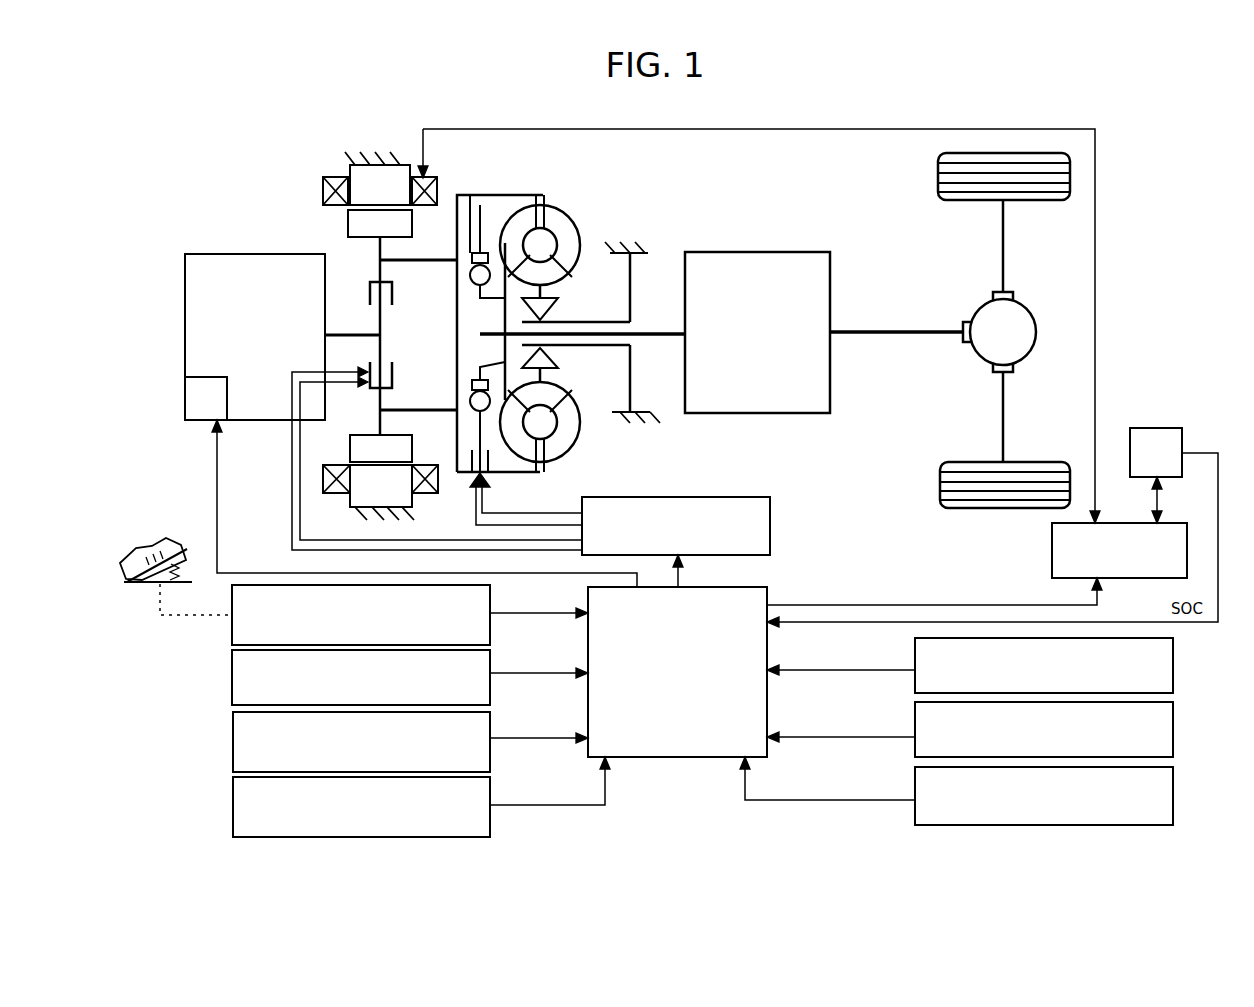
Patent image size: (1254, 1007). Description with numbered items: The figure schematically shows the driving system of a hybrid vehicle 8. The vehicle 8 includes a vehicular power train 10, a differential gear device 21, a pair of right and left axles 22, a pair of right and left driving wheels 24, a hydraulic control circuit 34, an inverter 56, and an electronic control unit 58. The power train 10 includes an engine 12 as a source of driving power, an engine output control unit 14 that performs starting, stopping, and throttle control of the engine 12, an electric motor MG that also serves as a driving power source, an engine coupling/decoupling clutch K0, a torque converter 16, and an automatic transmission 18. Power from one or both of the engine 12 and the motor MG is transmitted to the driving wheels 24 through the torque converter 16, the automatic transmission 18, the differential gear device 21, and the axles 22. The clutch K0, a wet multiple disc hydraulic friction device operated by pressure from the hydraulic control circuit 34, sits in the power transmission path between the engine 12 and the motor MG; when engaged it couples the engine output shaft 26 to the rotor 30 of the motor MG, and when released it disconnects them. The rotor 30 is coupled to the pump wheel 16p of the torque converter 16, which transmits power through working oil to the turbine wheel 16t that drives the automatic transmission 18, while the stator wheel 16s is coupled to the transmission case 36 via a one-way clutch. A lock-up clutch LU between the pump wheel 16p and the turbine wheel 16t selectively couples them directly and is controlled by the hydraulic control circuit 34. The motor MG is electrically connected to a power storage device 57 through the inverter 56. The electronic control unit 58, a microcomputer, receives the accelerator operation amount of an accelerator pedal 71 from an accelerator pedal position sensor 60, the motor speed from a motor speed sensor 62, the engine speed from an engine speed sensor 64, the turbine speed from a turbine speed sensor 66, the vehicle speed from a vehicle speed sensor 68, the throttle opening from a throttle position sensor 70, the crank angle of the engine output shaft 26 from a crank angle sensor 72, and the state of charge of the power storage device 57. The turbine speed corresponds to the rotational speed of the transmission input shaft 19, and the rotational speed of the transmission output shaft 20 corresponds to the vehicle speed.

The hybrid vehicle 8 is at (1191, 122).
The vehicular power train 10 is at (213, 173).
The engine 12 is at (212, 262).
The engine output control unit 14 is at (195, 390).
The torque converter 16 is at (572, 212).
The pump wheel 16p is at (570, 440).
The turbine wheel 16t is at (522, 448).
The stator wheel 16s is at (553, 383).
The automatic transmission 18 is at (812, 260).
The transmission input shaft 19 is at (668, 330).
The transmission output shaft 20 is at (845, 330).
The differential gear device 21 is at (1018, 316).
The axles 22 is at (1000, 249).
The driving wheels 24 is at (937, 178).
The engine output shaft 26 is at (352, 328).
The rotor 30 is at (350, 222).
The hydraulic control circuit 34 is at (772, 508).
The transmission case 36 is at (390, 148).
The inverter 56 is at (1052, 538).
The power storage device 57 is at (1154, 428).
The electronic control unit 58 is at (755, 593).
The accelerator pedal position sensor 60 is at (232, 628).
The motor speed sensor 62 is at (232, 677).
The engine speed sensor 64 is at (233, 741).
The turbine speed sensor 66 is at (233, 804).
The vehicle speed sensor 68 is at (1175, 652).
The throttle position sensor 70 is at (1175, 713).
The accelerator pedal 71 is at (187, 552).
The crank angle sensor 72 is at (1175, 792).
The electric motor MG is at (314, 207).
The engine coupling/decoupling clutch K0 is at (396, 375).
The lock-up clutch LU is at (490, 208).